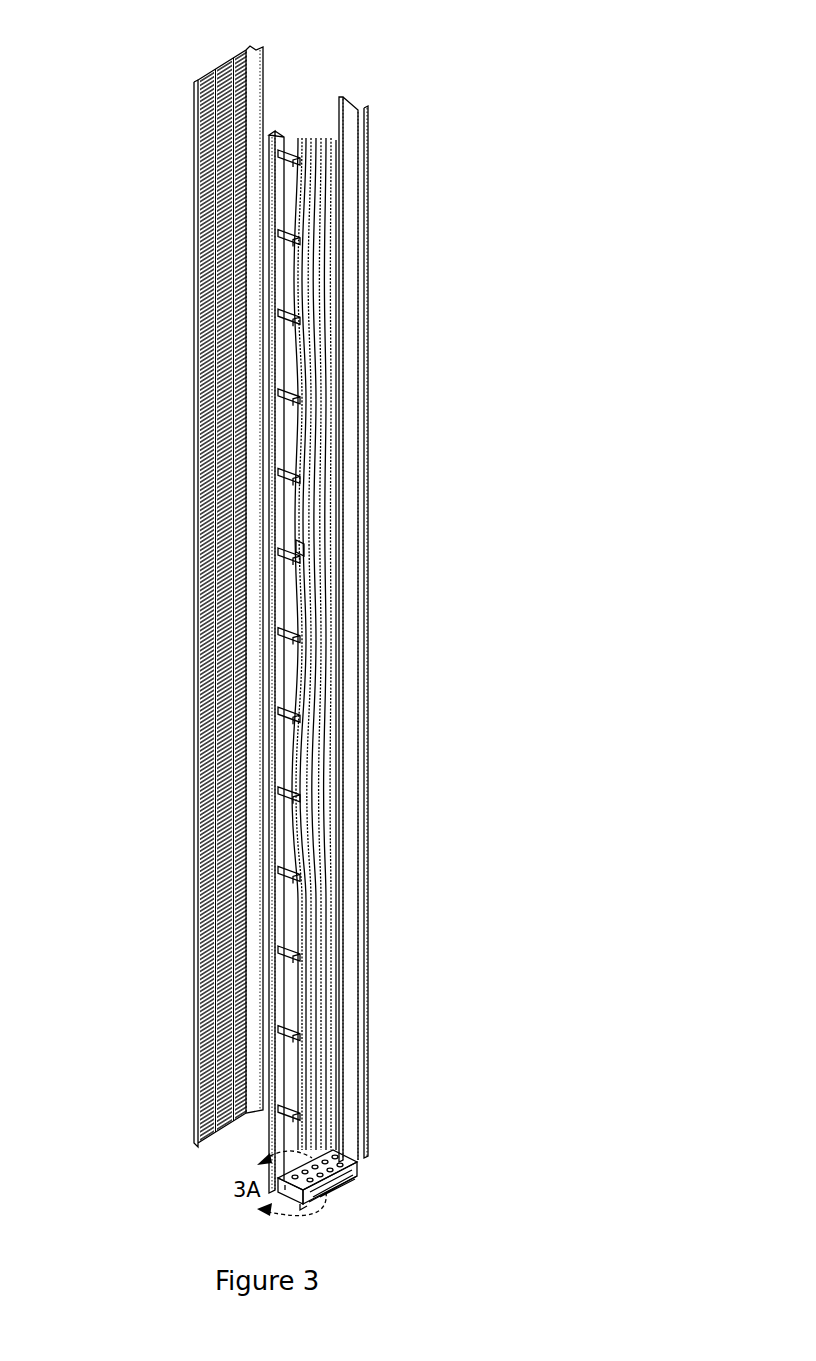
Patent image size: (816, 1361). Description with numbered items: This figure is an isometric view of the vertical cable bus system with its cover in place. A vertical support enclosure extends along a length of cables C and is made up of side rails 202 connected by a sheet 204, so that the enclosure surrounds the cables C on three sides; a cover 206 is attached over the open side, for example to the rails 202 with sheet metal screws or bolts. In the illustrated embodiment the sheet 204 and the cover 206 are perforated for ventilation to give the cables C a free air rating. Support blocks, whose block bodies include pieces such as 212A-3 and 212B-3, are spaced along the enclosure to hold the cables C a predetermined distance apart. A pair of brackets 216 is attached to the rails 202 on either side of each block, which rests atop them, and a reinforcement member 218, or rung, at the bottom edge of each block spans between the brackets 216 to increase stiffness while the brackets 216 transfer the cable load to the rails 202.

The side rails 202 is at (297, 128).
The sheet 204 is at (338, 1172).
The cover 206 is at (197, 104).
The block body piece 212A-3 is at (300, 543).
The block body piece 212B-3 is at (322, 372).
The brackets 216 is at (290, 713).
The reinforcement member 218 is at (300, 550).
The cables C is at (323, 815).